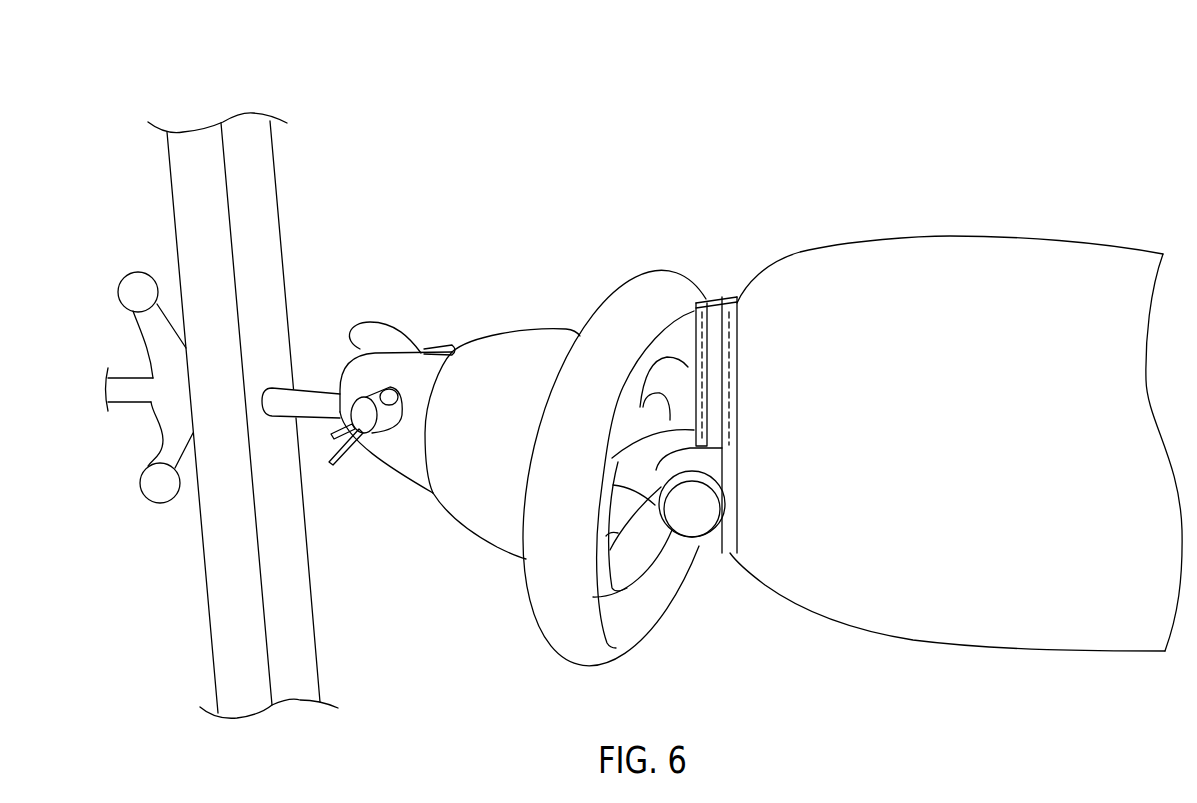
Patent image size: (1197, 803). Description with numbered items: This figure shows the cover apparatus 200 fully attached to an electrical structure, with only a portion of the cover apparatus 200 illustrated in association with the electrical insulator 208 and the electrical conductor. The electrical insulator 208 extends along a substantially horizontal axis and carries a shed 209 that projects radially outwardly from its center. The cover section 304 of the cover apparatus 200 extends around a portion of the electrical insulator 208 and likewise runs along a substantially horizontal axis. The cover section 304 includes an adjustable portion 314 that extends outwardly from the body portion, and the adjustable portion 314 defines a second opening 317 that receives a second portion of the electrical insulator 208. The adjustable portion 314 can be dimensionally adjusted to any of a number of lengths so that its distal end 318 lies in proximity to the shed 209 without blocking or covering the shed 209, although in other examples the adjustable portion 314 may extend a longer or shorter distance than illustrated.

The cover apparatus 200 is at (705, 182).
The electrical insulator 208 is at (437, 610).
The shed 209 is at (562, 640).
The cover section 304 is at (925, 249).
The adjustable portion 314 is at (660, 335).
The second opening 317 is at (717, 306).
The distal end 318 is at (690, 300).